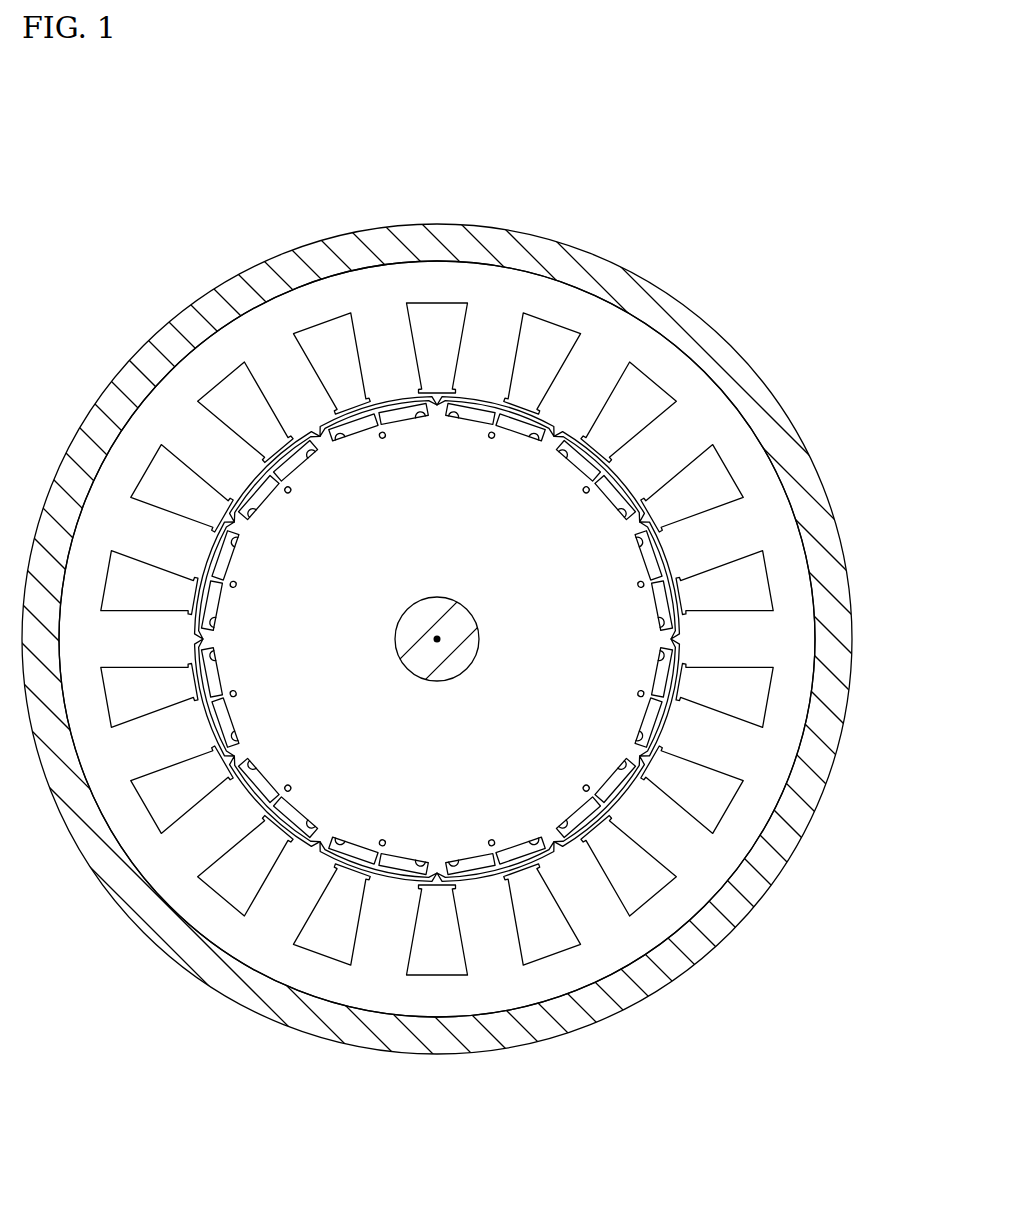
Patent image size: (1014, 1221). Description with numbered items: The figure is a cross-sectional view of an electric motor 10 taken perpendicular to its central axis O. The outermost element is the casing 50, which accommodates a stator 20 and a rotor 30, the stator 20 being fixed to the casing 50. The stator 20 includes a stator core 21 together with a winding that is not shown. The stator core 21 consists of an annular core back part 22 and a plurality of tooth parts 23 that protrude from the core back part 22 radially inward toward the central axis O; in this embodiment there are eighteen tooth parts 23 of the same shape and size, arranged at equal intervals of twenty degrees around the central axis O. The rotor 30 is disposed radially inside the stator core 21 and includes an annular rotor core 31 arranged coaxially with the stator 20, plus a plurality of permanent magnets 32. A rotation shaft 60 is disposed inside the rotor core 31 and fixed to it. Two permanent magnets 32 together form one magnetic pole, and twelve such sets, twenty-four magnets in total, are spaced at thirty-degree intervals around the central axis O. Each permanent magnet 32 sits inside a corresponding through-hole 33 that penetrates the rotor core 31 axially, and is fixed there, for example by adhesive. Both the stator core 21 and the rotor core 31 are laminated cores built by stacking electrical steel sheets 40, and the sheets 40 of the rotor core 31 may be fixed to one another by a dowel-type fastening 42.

The electric motor 10 is at (740, 130).
The stator 20 is at (724, 386).
The stator core 21 is at (538, 187).
The core back part 22 is at (625, 307).
The tooth parts 23 is at (572, 350).
The rotor 30 is at (262, 645).
The rotor core 31 is at (337, 825).
The permanent magnets 32 is at (520, 437).
The through-holes 33 is at (460, 866).
The electrical steel sheets 40 is at (220, 350).
The fastening 42 is at (290, 492).
The casing 50 is at (780, 428).
The rotation shaft 60 is at (470, 655).
The central axis O is at (440, 638).